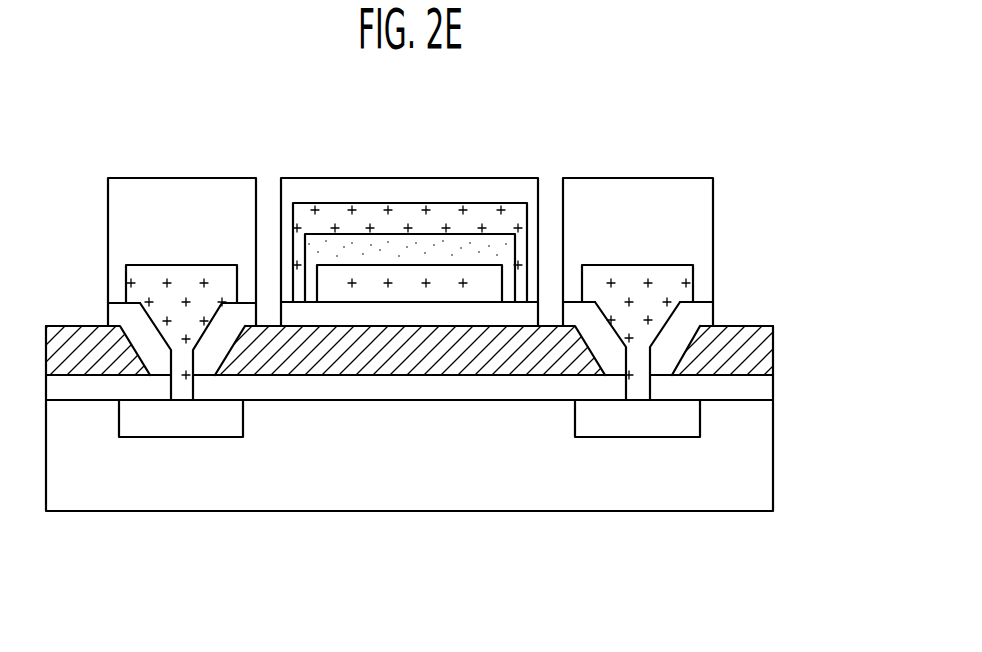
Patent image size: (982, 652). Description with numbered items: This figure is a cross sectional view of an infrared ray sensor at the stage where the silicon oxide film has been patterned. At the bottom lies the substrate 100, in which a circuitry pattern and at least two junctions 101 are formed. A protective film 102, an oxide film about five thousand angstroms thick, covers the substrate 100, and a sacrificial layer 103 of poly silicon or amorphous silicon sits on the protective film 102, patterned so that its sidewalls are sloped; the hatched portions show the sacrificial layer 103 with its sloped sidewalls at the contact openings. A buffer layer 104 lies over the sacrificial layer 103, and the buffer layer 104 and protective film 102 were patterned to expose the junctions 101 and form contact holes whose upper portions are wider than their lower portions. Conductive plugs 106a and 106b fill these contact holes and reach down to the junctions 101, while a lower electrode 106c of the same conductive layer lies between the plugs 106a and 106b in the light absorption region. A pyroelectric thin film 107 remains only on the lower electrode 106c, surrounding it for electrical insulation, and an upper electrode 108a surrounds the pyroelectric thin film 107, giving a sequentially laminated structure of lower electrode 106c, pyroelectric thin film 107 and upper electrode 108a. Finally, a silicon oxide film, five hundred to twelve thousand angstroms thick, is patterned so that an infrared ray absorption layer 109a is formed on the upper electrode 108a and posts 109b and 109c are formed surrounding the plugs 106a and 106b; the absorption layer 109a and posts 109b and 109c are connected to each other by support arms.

The substrate 100 is at (763, 473).
The junction 101 is at (690, 423).
The protective film 102 is at (768, 389).
The sacrificial layer 103 is at (767, 343).
The buffer layer 104 is at (707, 314).
The plug 106a is at (687, 280).
The plug 106b is at (130, 283).
The lower electrode 106c is at (333, 282).
The pyroelectric thin film 107 is at (407, 248).
The upper electrode 108a is at (450, 218).
The infrared ray absorption layer 109a is at (512, 190).
The post 109b is at (637, 192).
The post 109c is at (193, 197).